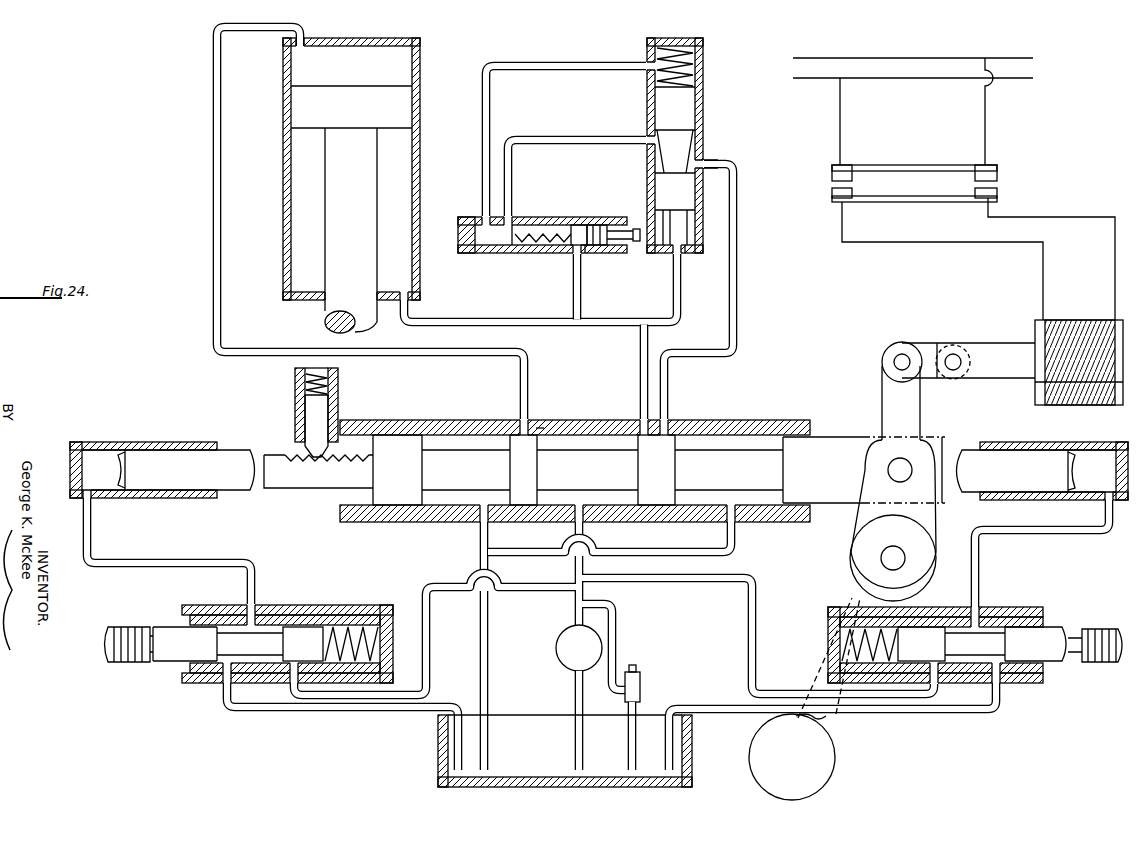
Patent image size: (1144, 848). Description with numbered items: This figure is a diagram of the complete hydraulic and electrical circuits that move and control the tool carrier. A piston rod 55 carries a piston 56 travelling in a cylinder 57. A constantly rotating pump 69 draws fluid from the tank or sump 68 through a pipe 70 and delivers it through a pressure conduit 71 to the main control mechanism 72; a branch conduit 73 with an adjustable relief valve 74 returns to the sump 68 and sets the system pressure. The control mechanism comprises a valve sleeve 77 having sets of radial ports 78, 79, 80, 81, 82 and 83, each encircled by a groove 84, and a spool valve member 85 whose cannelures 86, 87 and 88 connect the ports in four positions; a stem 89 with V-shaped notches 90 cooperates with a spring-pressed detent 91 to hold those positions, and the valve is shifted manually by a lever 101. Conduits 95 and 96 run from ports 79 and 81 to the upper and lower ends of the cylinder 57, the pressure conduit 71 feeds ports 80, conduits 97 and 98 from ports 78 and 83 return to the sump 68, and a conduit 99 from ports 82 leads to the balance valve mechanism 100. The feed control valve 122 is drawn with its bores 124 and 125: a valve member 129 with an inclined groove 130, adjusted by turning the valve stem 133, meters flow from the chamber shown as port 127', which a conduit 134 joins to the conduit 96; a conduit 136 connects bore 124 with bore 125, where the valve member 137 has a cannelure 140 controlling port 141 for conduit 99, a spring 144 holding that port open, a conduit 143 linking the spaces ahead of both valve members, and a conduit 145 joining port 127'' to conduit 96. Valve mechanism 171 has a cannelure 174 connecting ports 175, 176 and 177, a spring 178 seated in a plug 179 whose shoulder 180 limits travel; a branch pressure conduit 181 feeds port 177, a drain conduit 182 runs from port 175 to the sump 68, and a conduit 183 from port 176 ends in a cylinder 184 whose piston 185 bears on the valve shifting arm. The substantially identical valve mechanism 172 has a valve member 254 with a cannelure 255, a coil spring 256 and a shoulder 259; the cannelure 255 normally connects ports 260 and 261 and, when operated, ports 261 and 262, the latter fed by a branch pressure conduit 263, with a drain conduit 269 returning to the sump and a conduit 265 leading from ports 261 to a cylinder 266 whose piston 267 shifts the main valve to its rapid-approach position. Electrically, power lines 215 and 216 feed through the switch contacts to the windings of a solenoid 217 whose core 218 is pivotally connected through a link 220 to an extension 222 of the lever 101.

The piston rod 55 is at (335, 309).
The piston 56 is at (405, 104).
The cylinder 57 is at (418, 172).
The tank or sump 68 is at (441, 757).
The pressure circulating pump 69 is at (559, 648).
The pipe 70 is at (575, 696).
The pressure pipe or conduit 71 is at (575, 606).
The main control mechanism 72 is at (642, 465).
The branch pipe or conduit 73 is at (616, 628).
The adjustable relief valve 74 is at (641, 681).
The valve sleeve 77 is at (590, 468).
The radial ports 78 is at (490, 523).
The radial ports 79 is at (541, 420).
The radial ports 80 is at (585, 523).
The radial ports 81 is at (638, 420).
The radial ports 82 is at (669, 420).
The radial ports 83 is at (736, 523).
The groove 84 is at (488, 420).
The spool type valve member 85 is at (850, 441).
The reduced portion or cannelure 86 is at (435, 465).
The reduced portion or cannelure 87 is at (545, 470).
The reduced portion or cannelure 88 is at (690, 474).
The stem 89 is at (942, 457).
The V-shaped notches 90 is at (297, 449).
The spring pressed detent 91 is at (331, 421).
The pipe or conduit 95 is at (489, 356).
The pipe or conduit 96 is at (641, 344).
The pipe or conduit 97 is at (481, 546).
The pipe or conduit 98 is at (737, 552).
The pipe or conduit 99 is at (738, 313).
The balance valve mechanism 100 is at (687, 146).
The lever 101 is at (830, 739).
The pilot valve 122 is at (589, 236).
The bore 124 is at (490, 248).
The bore 125 is at (712, 137).
The port 127' is at (606, 263).
The port 127'' is at (702, 263).
The valve member 129 is at (518, 242).
The inclined groove 130 is at (558, 246).
The valve stem 133 is at (626, 242).
The pipe or conduit 134 is at (576, 274).
The pipe or conduit 136 is at (571, 139).
The valve member 137 is at (697, 195).
The reduced central portion or cannelure 140 is at (650, 150).
The port 141 is at (713, 158).
The conduit 143 is at (553, 66).
The spring 144 is at (704, 66).
The pipe or conduit 145 is at (682, 290).
The valve mechanism 171 is at (246, 647).
The valve mechanism 172 is at (953, 650).
The reduced portion or cannelure 174 is at (226, 640).
The port 175 is at (224, 685).
The port 176 is at (259, 612).
The port 177 is at (291, 684).
The spring 178 is at (362, 610).
The plug 179 is at (165, 667).
The shoulder 180 is at (123, 667).
The branch pressure pipe or conduit 181 is at (424, 602).
The drain pipe or conduit 182 is at (320, 708).
The pipe or conduit 183 is at (175, 562).
The cylinder 184 is at (111, 453).
The piston 185 is at (239, 486).
The power line 215 is at (973, 203).
The power line 216 is at (981, 57).
The solenoid 217 is at (1085, 319).
The core 218 is at (1010, 343).
The link 220 is at (934, 344).
The extension 222 is at (885, 386).
The valve member 254 is at (1061, 628).
The reduced portion or cannelure 255 is at (1009, 638).
The coil spring 256 is at (832, 653).
The shoulder 259 is at (1085, 665).
The ports 260 is at (1001, 709).
The ports 261 is at (985, 606).
The ports 262 is at (945, 689).
The branch pressure pipe or conduit 263 is at (756, 637).
The pipe or conduit 265 is at (1050, 533).
The cylinder 266 is at (1110, 441).
The piston 267 is at (975, 449).
The conduit 269 is at (951, 713).